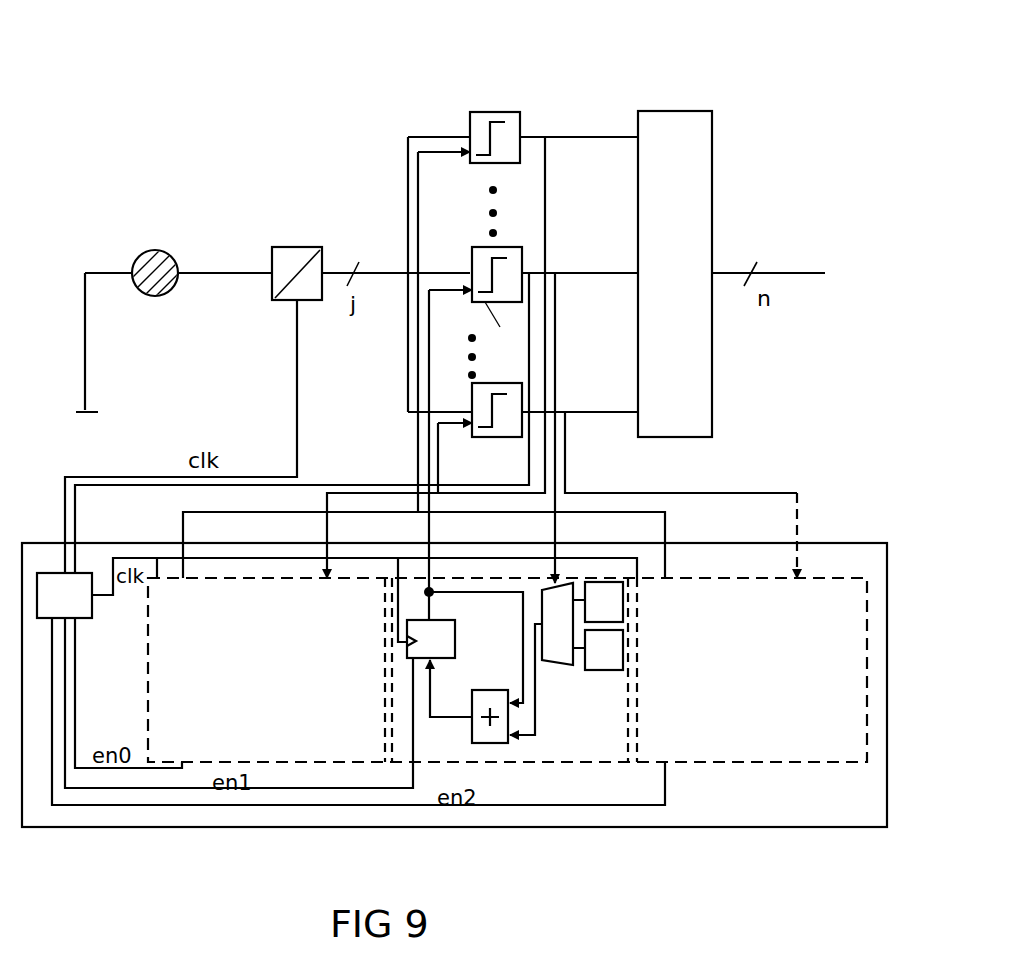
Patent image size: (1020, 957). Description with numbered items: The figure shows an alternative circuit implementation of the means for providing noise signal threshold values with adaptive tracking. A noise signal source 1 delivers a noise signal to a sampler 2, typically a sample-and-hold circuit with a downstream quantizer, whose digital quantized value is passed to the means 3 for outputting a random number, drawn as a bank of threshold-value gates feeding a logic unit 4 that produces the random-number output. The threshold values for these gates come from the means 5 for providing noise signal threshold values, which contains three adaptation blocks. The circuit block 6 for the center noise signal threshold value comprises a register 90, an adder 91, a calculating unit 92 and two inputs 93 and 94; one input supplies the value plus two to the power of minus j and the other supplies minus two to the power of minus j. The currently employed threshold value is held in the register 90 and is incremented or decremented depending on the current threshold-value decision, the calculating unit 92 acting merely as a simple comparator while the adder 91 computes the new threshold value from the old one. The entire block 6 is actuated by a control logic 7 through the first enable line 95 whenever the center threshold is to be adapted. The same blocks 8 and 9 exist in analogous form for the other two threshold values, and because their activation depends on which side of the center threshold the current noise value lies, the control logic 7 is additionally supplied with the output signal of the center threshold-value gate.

The noise signal source 1 is at (162, 250).
The sampler 2 is at (297, 246).
The means for outputting a random number 3 is at (474, 98).
The logic unit 4 is at (667, 117).
The means for providing noise signal threshold values 5 is at (832, 542).
The circuit block for the center noise signal threshold value 6 is at (595, 625).
The control logic 7 is at (82, 573).
The block for another threshold value 8 is at (340, 578).
The block for another threshold value 9 is at (847, 762).
The register 90 is at (455, 648).
The adder 91 is at (498, 744).
The calculating unit 92 is at (548, 666).
The first input 93 is at (625, 597).
The second input 94 is at (625, 648).
The enable line en1 95 is at (266, 762).